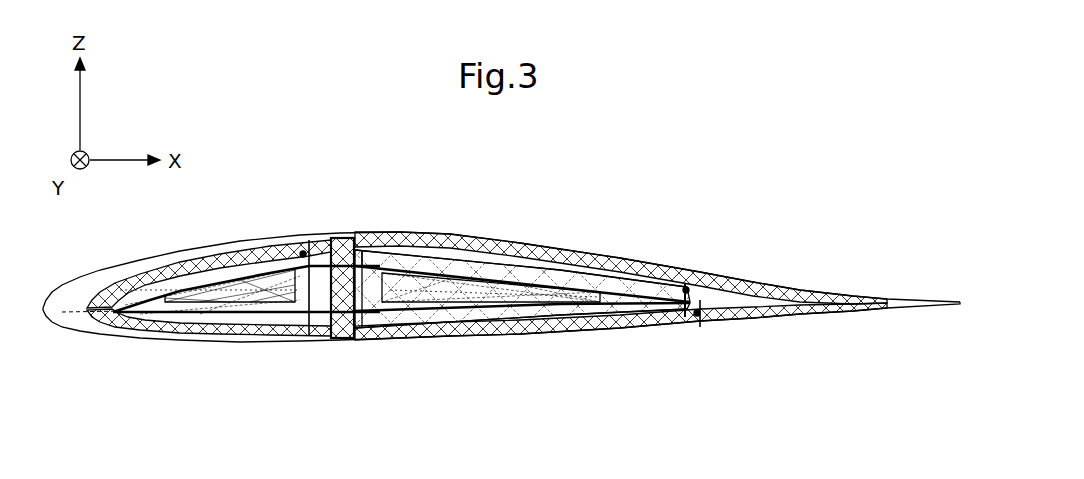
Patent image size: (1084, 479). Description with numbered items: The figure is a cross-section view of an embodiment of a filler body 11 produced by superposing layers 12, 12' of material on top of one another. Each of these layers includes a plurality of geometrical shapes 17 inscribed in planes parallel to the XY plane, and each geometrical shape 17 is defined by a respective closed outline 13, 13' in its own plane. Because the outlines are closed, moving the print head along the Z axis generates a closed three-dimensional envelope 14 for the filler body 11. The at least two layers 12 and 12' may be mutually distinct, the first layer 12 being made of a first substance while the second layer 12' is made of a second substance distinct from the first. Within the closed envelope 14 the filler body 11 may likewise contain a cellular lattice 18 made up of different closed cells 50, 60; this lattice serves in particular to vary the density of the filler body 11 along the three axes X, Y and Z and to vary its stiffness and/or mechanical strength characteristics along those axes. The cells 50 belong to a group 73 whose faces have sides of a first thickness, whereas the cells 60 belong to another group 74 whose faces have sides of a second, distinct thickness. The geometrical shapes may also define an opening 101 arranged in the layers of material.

The filler body 11 is at (846, 261).
The first layer 12 is at (720, 241).
The second layer 12' is at (506, 213).
The closed outline 13 is at (621, 354).
The closed outline 13' is at (386, 237).
The closed three-dimensional envelope 14 is at (646, 258).
The geometrical shape 17 is at (503, 280).
The cellular lattice 18 is at (393, 245).
The closed cell 50 is at (352, 342).
The closed cell 60 is at (462, 330).
The third group 73 is at (373, 340).
The third group 74 is at (450, 318).
The opening 101 is at (303, 253).